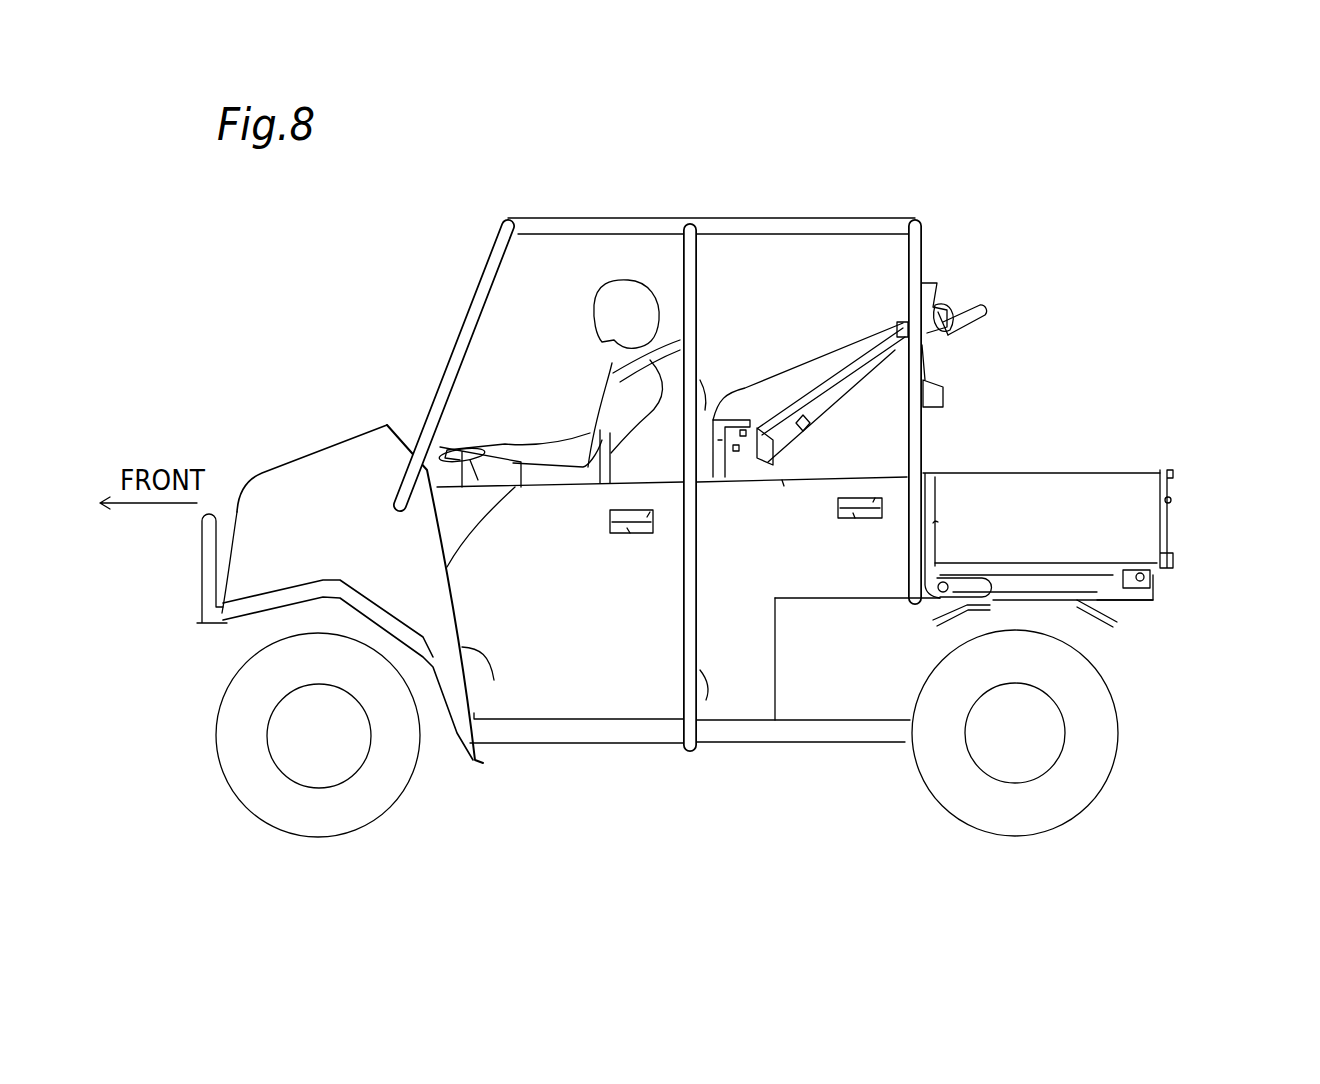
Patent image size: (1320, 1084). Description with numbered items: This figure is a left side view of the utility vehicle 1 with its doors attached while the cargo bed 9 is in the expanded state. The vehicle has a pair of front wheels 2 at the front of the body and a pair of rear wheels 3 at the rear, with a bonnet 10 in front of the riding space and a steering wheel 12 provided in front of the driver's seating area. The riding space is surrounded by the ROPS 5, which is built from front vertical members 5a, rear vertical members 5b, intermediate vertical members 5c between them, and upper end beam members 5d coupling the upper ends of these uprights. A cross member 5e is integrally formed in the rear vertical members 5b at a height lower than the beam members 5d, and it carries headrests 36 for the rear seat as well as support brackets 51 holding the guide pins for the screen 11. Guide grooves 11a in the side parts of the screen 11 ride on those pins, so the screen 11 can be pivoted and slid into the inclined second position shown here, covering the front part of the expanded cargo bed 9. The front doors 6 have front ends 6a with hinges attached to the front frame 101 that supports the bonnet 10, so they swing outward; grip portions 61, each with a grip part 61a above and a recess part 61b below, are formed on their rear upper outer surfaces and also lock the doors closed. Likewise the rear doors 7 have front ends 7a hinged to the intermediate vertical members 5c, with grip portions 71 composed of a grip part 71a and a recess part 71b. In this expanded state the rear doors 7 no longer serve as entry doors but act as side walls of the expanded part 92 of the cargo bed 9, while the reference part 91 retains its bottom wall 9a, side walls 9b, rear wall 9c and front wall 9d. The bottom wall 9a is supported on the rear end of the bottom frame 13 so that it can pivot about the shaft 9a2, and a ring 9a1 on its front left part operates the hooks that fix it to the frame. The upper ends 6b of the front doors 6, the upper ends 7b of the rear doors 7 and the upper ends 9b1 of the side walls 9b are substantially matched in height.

The utility vehicle 1 is at (246, 436).
The front wheels 2 is at (317, 807).
The rear wheels 3 is at (1080, 787).
The ROPS 5 is at (503, 190).
The front vertical members 5a is at (460, 347).
The rear vertical members 5b is at (935, 215).
The intermediate vertical members 5c is at (695, 262).
The upper end beam members 5d is at (595, 228).
The cross member 5e is at (920, 288).
The front doors 6 is at (550, 647).
The front ends of the front doors 6a is at (494, 680).
The upper ends of the front doors 6b is at (447, 567).
The grip portions 61 is at (616, 552).
The grip part 61a is at (647, 517).
The recess part 61b is at (627, 528).
The rear doors 7 is at (728, 642).
The front ends of the rear doors 7a is at (706, 700).
The upper ends of the rear doors 7b is at (782, 480).
The grip portions 71 is at (846, 540).
The grip part 71a is at (873, 502).
The recess part 71b is at (853, 513).
The cargo bed 9 is at (1153, 452).
The bottom wall 9a is at (1113, 570).
The ring 9a1 is at (987, 590).
The shaft 9a2 is at (1173, 575).
The side walls 9b is at (1052, 500).
The upper ends of the side walls 9b1 is at (1085, 472).
The rear wall 9c is at (1175, 523).
The front wall 9d is at (933, 523).
The reference part 91 is at (1018, 484).
The expanded part 92 is at (859, 454).
The bonnet 10 is at (302, 458).
The screen 11 is at (985, 312).
The guide grooves 11a is at (933, 330).
The steering wheel 12 is at (440, 450).
The bottom frame 13 is at (1083, 590).
The headrests 36 is at (937, 286).
The support brackets 51 is at (943, 320).
The front frame 101 is at (523, 487).